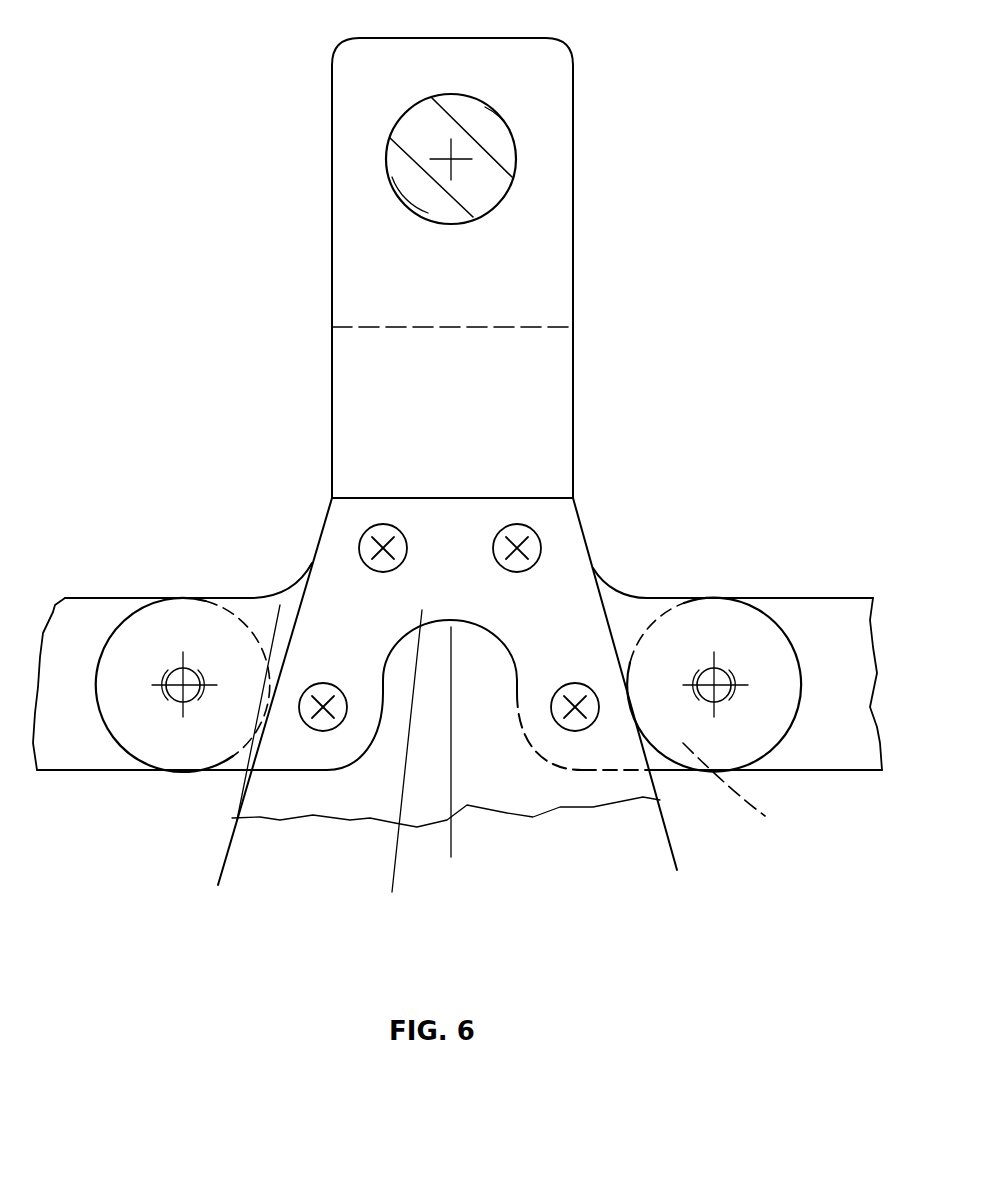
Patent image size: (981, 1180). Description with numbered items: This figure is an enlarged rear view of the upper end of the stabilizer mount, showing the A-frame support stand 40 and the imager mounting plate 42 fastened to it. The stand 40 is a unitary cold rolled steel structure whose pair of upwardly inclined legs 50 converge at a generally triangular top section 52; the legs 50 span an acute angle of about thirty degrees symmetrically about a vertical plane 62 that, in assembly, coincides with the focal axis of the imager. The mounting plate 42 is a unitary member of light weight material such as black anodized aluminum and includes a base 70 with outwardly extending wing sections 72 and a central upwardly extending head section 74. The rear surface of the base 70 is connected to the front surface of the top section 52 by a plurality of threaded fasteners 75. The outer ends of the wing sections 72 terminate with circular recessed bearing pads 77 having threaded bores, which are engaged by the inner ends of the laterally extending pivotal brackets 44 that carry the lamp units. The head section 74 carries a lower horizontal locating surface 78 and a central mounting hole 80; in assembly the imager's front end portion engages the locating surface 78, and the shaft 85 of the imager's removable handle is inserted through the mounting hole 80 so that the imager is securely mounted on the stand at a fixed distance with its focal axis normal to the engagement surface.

The A-frame support stand 40 is at (319, 532).
The imager mounting plate 42 is at (573, 405).
The pivotal brackets 44 is at (807, 603).
The legs 50 is at (682, 701).
The top section 52 is at (557, 525).
The vertical plane 62 is at (451, 837).
The base 70 is at (392, 892).
The wing sections 72 is at (272, 690).
The head section 74 is at (335, 385).
The threaded fasteners 75 is at (323, 722).
The bearing pads 77 is at (768, 818).
The locating surface 78 is at (377, 268).
The mounting hole 80 is at (392, 135).
The shaft 85 is at (500, 153).